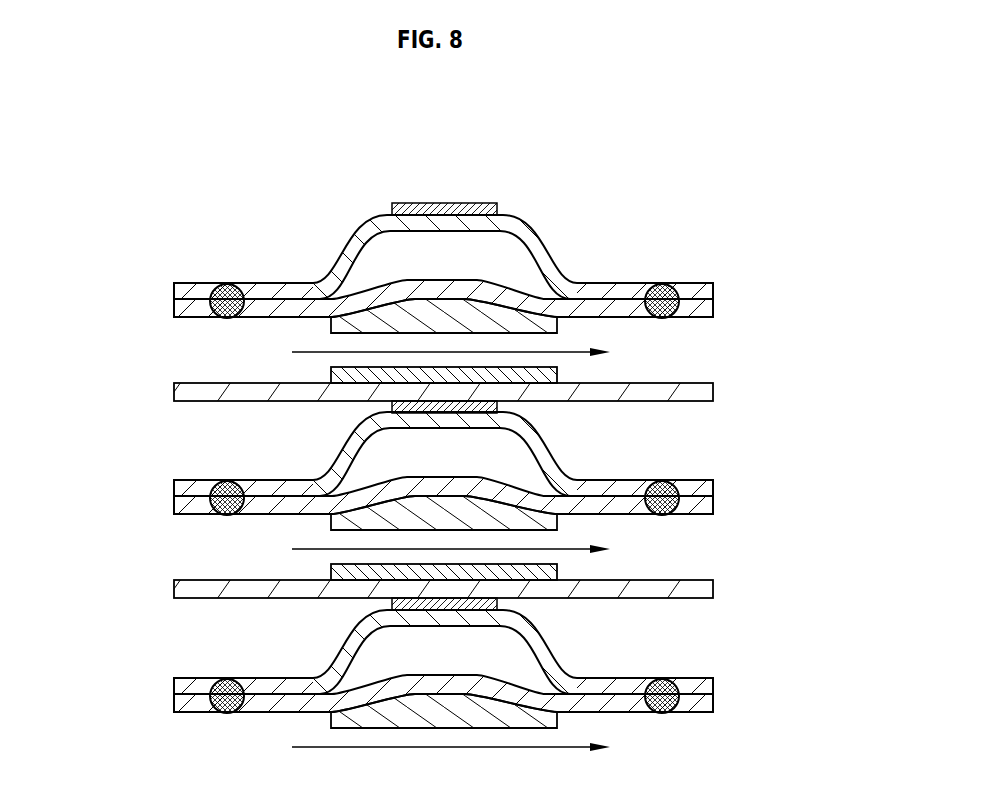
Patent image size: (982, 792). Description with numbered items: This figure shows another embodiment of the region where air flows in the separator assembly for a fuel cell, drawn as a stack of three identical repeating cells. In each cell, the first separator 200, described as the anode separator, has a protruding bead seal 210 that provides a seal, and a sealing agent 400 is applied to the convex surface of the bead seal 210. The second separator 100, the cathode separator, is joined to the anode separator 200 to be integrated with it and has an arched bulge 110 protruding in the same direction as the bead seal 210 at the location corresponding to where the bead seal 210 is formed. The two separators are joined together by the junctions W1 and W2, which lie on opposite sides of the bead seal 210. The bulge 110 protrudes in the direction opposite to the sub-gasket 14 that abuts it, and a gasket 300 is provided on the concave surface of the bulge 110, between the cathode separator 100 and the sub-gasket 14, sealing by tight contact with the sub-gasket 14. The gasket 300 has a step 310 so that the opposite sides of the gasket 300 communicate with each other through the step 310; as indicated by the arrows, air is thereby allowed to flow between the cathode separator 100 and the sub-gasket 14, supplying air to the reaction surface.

The sub-gasket 14 is at (705, 392).
The second separator 100 is at (493, 262).
The bulge 110 is at (398, 292).
The first separator 200 is at (493, 257).
The bead seal 210 is at (542, 253).
The gasket 300 is at (367, 325).
The step 310 is at (557, 375).
The sealing agent 400 is at (443, 203).
The junction W1 is at (660, 300).
The junction W2 is at (227, 302).